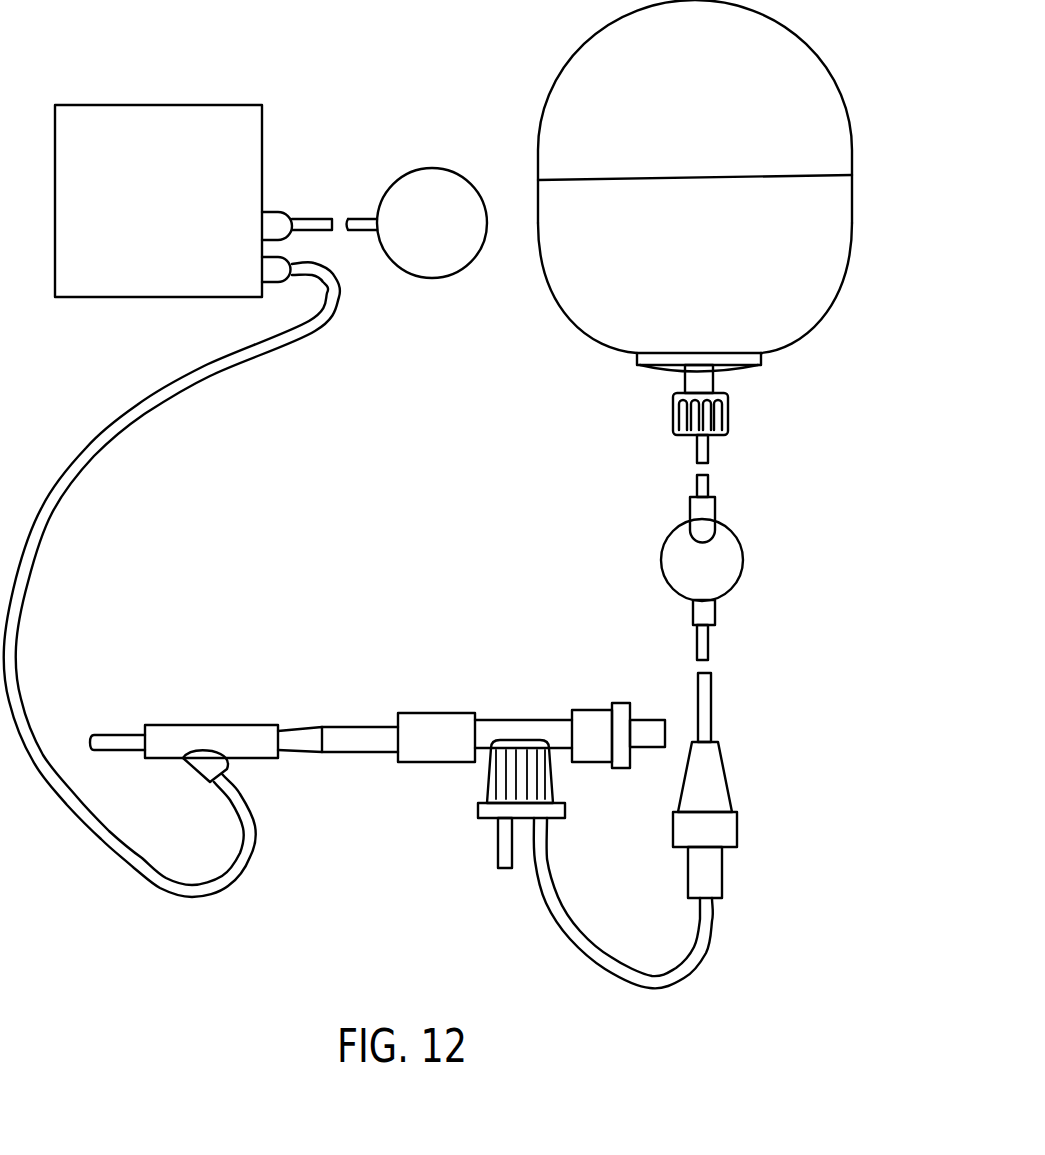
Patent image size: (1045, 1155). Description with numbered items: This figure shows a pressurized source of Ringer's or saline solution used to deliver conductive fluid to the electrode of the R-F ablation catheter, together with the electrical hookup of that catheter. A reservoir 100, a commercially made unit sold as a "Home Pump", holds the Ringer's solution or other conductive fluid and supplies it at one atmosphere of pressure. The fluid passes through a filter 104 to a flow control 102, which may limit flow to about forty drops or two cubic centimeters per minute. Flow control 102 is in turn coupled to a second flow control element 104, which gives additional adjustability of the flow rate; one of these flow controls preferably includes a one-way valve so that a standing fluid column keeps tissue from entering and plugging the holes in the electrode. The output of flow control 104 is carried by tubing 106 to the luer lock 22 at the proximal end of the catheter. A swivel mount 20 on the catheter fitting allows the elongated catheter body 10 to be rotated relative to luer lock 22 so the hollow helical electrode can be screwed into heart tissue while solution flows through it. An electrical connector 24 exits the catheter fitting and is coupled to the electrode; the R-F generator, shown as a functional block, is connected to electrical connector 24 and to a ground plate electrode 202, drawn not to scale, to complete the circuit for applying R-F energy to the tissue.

The catheter body 10 is at (118, 735).
The swivel mount 20 is at (205, 728).
The luer lock 22 is at (280, 283).
The electrical connector 24 is at (330, 722).
The reservoir 100 is at (820, 55).
The flow control 102 is at (725, 768).
The flow control element 104 is at (743, 548).
The tubing 106 is at (557, 928).
The ground plate electrode 202 is at (408, 278).